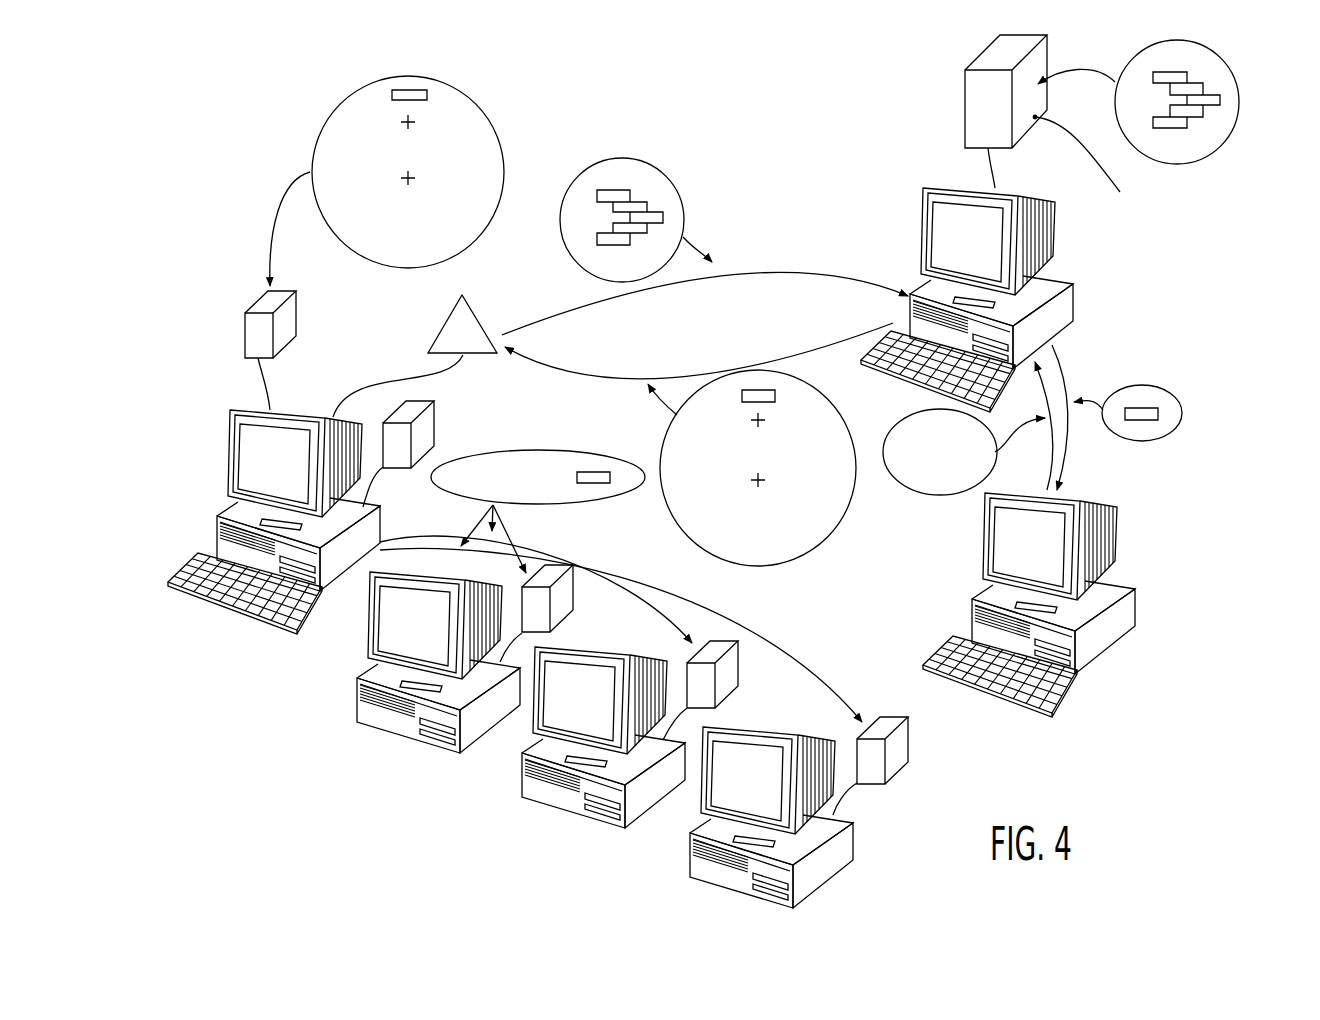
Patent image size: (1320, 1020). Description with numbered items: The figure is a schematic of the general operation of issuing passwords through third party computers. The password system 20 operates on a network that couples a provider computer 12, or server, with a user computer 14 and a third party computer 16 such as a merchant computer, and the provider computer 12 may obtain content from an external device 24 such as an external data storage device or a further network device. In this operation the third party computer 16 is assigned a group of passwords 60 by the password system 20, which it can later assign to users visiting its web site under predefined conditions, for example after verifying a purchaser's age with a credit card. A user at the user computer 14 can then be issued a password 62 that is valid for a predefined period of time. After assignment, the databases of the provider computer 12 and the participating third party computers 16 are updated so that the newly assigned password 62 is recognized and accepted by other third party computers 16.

The provider computer 12 is at (217, 535).
The user computer 14 is at (1138, 607).
The third party computer 16 is at (1077, 303).
The password system 20 is at (444, 325).
The external device 24 is at (963, 110).
The group of passwords 60 is at (618, 158).
The password 62 is at (408, 88).